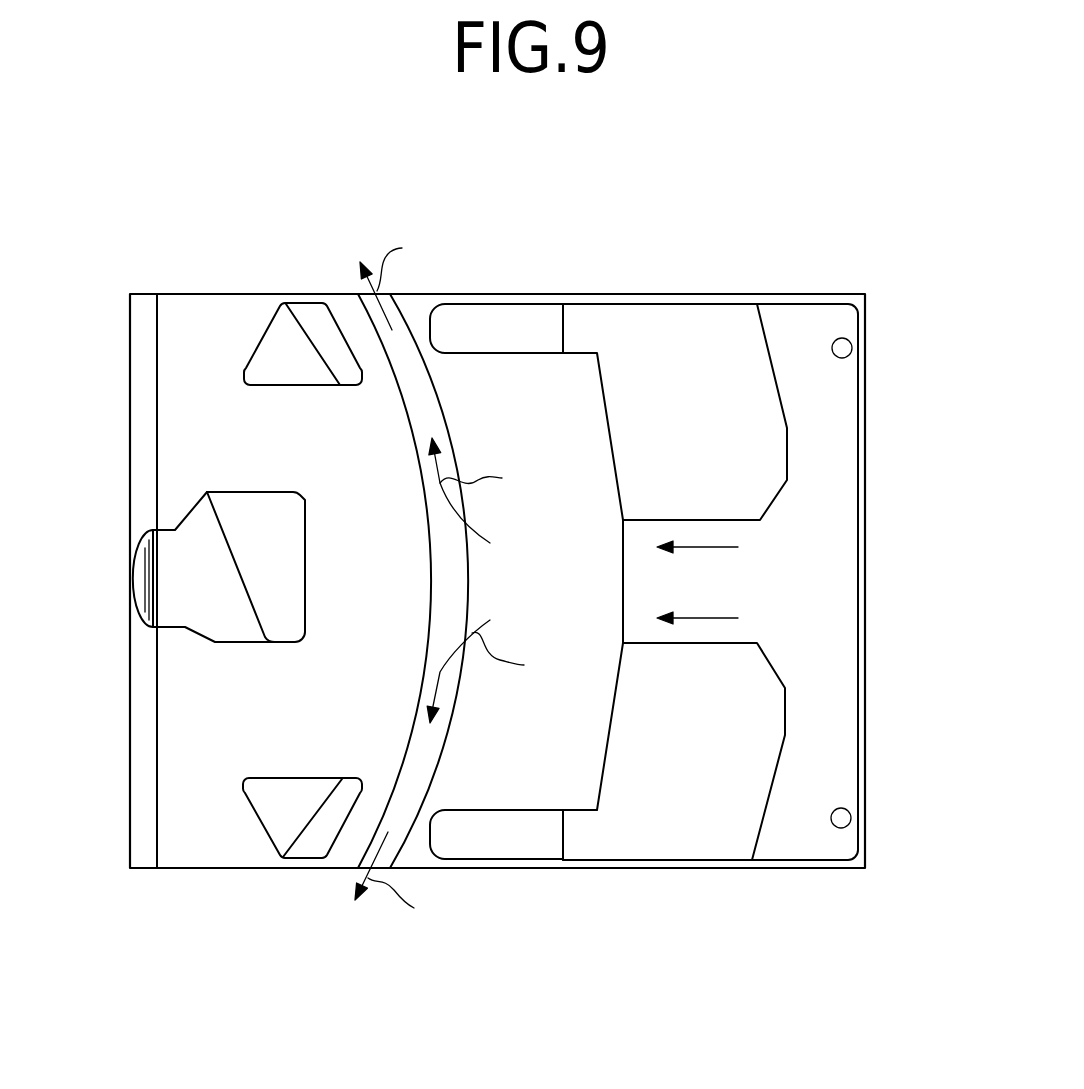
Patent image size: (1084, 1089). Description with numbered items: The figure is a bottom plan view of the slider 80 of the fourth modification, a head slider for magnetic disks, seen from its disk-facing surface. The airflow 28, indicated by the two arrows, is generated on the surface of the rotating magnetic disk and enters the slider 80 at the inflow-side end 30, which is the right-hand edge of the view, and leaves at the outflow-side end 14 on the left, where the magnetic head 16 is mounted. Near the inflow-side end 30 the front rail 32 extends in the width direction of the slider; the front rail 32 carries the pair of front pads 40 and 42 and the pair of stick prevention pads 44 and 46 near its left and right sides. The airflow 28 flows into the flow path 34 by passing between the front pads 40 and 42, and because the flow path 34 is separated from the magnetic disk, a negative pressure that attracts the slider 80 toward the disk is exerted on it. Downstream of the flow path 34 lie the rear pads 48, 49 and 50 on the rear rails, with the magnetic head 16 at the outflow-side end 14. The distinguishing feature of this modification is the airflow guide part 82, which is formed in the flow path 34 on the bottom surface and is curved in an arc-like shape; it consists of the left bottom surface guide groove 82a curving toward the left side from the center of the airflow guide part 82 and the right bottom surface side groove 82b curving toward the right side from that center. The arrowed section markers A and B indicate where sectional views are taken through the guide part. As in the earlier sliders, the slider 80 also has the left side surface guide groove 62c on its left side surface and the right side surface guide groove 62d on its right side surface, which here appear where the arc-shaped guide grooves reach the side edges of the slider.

The slider 80 is at (535, 197).
The inflow-side end 30 is at (866, 627).
The outflow-side end 14 is at (130, 765).
The flow path 34 is at (501, 390).
The front pad 42 is at (711, 324).
The front pad 40 is at (715, 843).
The front rail 32 is at (846, 465).
The stick prevention pad 46 is at (850, 350).
The stick prevention pad 44 is at (849, 822).
The airflow 28 is at (712, 547).
The airflow guide part 82 is at (481, 583).
The right bottom surface side groove 82b is at (413, 440).
The left bottom surface guide groove 82a is at (414, 717).
The section line A is at (496, 568).
The right side surface guide groove 62d is at (361, 294).
The left side surface guide groove 62c is at (362, 866).
The section line B is at (405, 580).
The rear pad 50 is at (264, 332).
The rear pad 48 is at (262, 832).
The rear pad 49 is at (208, 503).
The magnetic head 16 is at (147, 574).